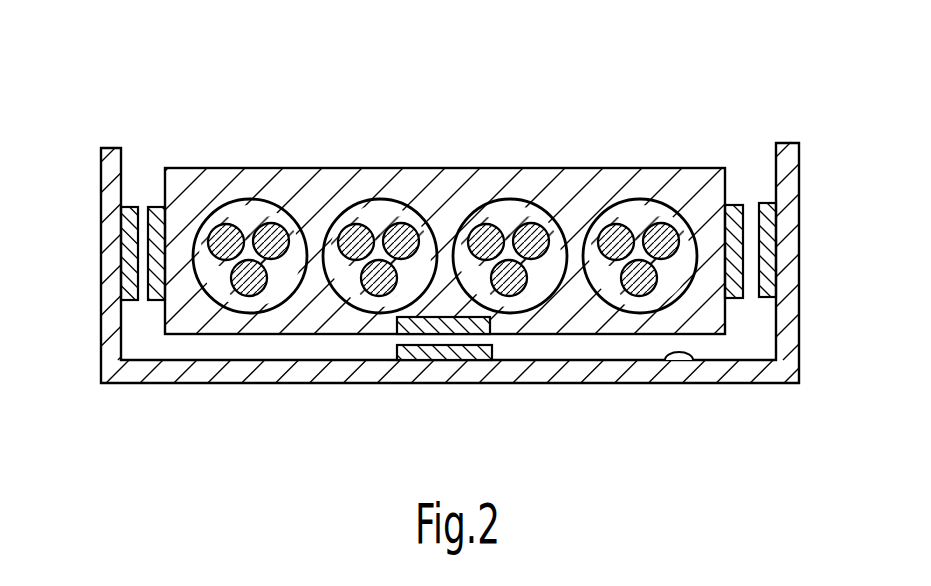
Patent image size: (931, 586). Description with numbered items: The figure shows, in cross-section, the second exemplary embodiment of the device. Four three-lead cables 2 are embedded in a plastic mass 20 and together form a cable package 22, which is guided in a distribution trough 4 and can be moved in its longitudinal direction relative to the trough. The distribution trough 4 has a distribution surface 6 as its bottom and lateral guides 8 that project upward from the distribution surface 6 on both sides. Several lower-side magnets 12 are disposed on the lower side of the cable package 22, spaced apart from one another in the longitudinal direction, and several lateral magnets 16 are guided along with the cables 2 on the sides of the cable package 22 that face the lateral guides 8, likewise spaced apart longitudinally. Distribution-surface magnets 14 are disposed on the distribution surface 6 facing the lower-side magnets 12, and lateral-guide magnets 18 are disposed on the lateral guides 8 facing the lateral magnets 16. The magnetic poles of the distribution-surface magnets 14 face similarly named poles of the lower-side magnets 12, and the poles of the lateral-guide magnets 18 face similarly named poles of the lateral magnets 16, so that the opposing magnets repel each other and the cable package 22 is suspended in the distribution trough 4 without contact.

The three-lead cable 2 is at (373, 213).
The distribution trough 4 is at (560, 372).
The distribution surface 6 is at (695, 358).
The lateral guide 8 is at (110, 203).
The lower-side magnet 12 is at (382, 333).
The distribution-surface magnet 14 is at (495, 345).
The lateral magnet 16 is at (152, 205).
The lateral-guide magnet 18 is at (127, 205).
The plastic mass 20 is at (452, 197).
The cable package 22 is at (407, 142).